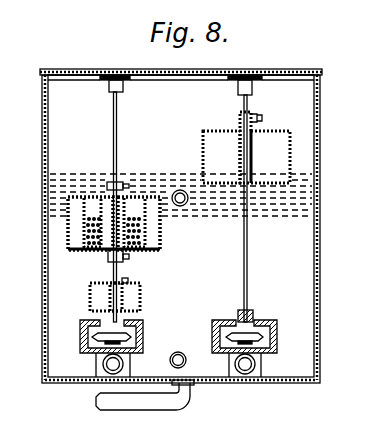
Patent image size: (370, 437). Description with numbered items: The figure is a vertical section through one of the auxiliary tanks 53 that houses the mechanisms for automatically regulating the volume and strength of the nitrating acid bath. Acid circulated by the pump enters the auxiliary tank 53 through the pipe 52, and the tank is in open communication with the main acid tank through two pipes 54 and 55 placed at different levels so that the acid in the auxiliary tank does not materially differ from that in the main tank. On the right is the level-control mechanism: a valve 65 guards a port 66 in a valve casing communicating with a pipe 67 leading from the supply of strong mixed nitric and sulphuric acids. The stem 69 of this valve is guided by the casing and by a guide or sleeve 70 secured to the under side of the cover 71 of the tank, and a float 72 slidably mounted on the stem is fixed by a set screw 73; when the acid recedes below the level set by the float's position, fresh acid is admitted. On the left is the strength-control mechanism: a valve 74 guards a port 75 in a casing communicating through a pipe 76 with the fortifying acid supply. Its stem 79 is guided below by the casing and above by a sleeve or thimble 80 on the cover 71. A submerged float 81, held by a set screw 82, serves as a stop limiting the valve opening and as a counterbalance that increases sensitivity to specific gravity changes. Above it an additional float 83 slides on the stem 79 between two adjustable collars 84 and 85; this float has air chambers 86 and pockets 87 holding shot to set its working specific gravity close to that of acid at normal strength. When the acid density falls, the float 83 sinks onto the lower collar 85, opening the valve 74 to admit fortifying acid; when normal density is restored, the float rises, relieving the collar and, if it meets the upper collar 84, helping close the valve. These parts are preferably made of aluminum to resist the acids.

The pipe 52 is at (141, 402).
The auxiliary tank 53 is at (322, 250).
The pipe 54 is at (179, 350).
The pipe 55 is at (180, 190).
The valve 65 is at (278, 334).
The port 66 is at (253, 318).
The pipe 67 is at (245, 383).
The valve stem 69 is at (248, 282).
The guide or sleeve 70 is at (253, 90).
The cover 71 is at (298, 76).
The float 72 is at (283, 133).
The set screw 73 is at (262, 118).
The valve 74 is at (80, 343).
The port 75 is at (135, 326).
The pipe 76 is at (102, 366).
The valve stem 79 is at (113, 118).
The sleeve or thimble 80 is at (123, 89).
The float 81 is at (89, 302).
The set screw 82 is at (128, 281).
The float 83 is at (161, 246).
The upper collar 84 is at (121, 183).
The lower collar 85 is at (108, 258).
The air chambers 86 is at (162, 226).
The pockets 87 is at (90, 210).